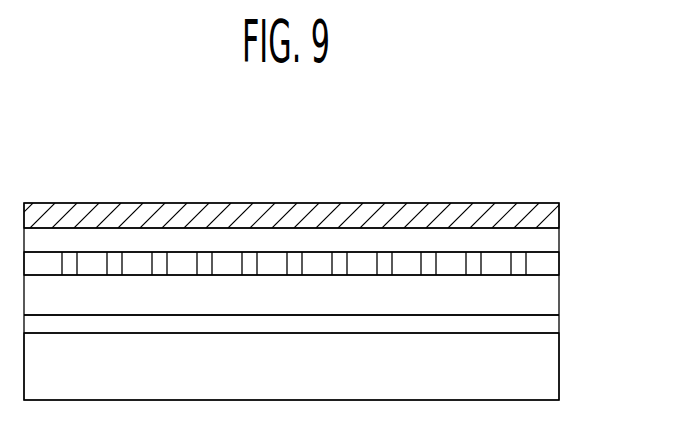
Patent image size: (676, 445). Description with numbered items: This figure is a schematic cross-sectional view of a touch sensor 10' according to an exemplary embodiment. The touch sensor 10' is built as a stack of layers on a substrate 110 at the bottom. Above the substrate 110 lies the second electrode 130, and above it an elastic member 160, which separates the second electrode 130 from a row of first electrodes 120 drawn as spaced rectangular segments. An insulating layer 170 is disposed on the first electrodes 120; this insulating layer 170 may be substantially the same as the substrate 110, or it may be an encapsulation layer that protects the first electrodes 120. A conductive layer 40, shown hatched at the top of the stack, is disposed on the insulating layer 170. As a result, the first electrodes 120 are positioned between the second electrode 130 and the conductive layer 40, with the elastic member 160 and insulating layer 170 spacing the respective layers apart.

The touch sensor 10' is at (301, 236).
The conductive layer 40 is at (550, 209).
The insulating layer 170 is at (552, 240).
The first electrodes 120 is at (548, 262).
The elastic member 160 is at (548, 295).
The second electrode 130 is at (550, 323).
The substrate 110 is at (550, 376).